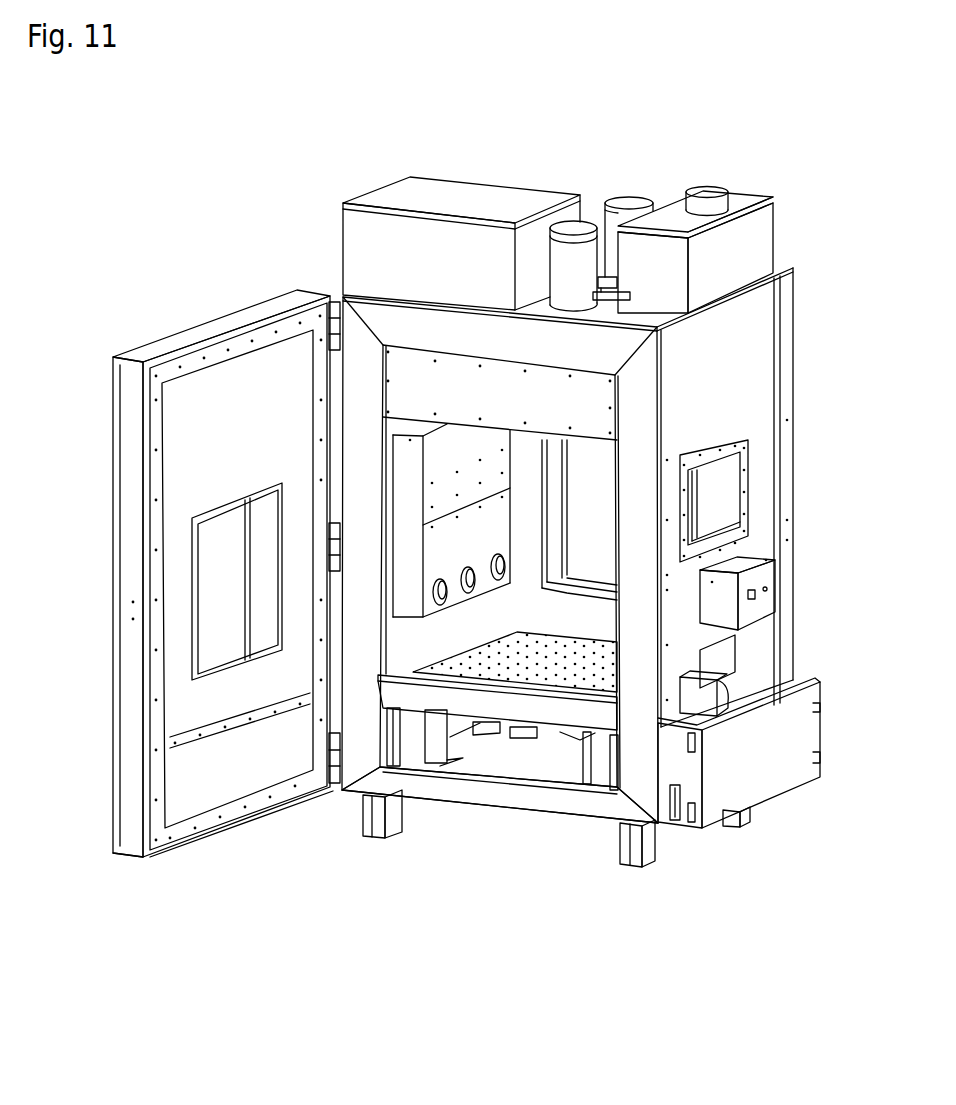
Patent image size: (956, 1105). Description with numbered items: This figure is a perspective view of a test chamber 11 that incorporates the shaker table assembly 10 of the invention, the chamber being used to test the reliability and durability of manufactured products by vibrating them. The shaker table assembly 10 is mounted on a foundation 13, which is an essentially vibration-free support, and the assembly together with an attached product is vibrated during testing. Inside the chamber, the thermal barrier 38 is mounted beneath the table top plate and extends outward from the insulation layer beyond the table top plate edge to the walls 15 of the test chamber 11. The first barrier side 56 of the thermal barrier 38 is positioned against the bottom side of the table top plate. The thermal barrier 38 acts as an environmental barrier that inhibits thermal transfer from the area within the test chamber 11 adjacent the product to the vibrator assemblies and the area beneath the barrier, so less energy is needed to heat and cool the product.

The test chamber 11 is at (623, 514).
The walls of the test chamber 15 is at (397, 620).
The shaker table assembly 10 is at (572, 783).
The first barrier side 56 is at (417, 806).
The thermal barrier 38 is at (500, 822).
The foundation 13 is at (500, 862).